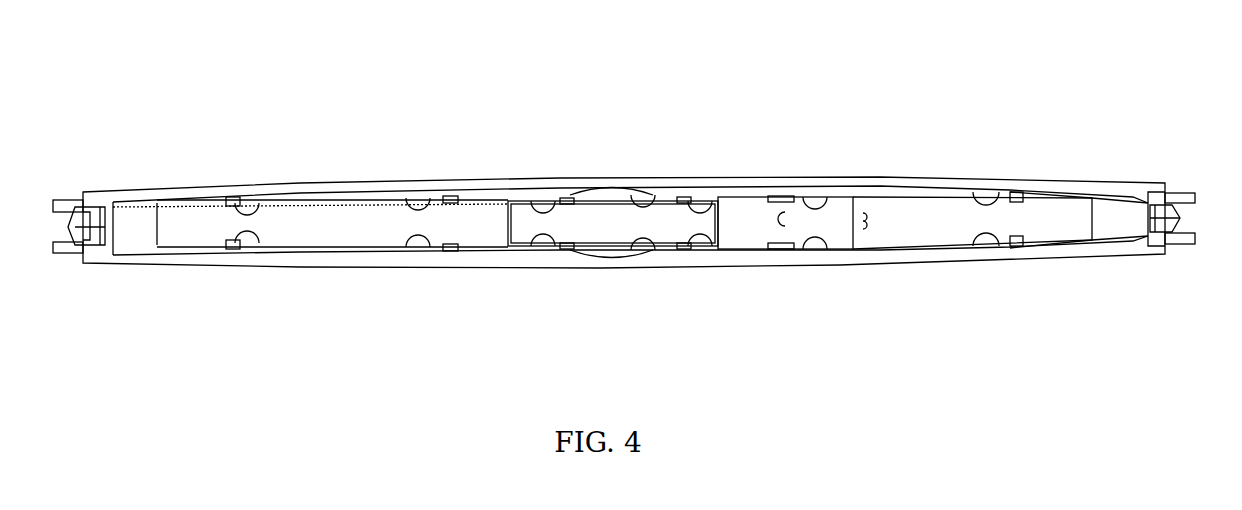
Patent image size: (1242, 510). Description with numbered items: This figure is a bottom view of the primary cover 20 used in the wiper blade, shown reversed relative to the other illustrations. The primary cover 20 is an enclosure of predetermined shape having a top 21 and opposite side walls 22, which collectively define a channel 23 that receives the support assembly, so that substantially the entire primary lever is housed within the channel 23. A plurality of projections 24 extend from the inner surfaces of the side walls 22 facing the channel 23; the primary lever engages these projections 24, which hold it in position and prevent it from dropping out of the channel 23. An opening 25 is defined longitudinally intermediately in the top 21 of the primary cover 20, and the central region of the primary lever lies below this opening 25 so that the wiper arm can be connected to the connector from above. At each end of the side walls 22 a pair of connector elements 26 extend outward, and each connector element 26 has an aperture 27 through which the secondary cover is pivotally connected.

The primary cover 20 is at (882, 148).
The top 21 is at (331, 250).
The side walls 22 is at (597, 186).
The channel 23 is at (488, 228).
The projections 24 is at (258, 198).
The opening 25 is at (651, 192).
The connector elements 26 is at (62, 200).
The aperture 27 is at (65, 203).